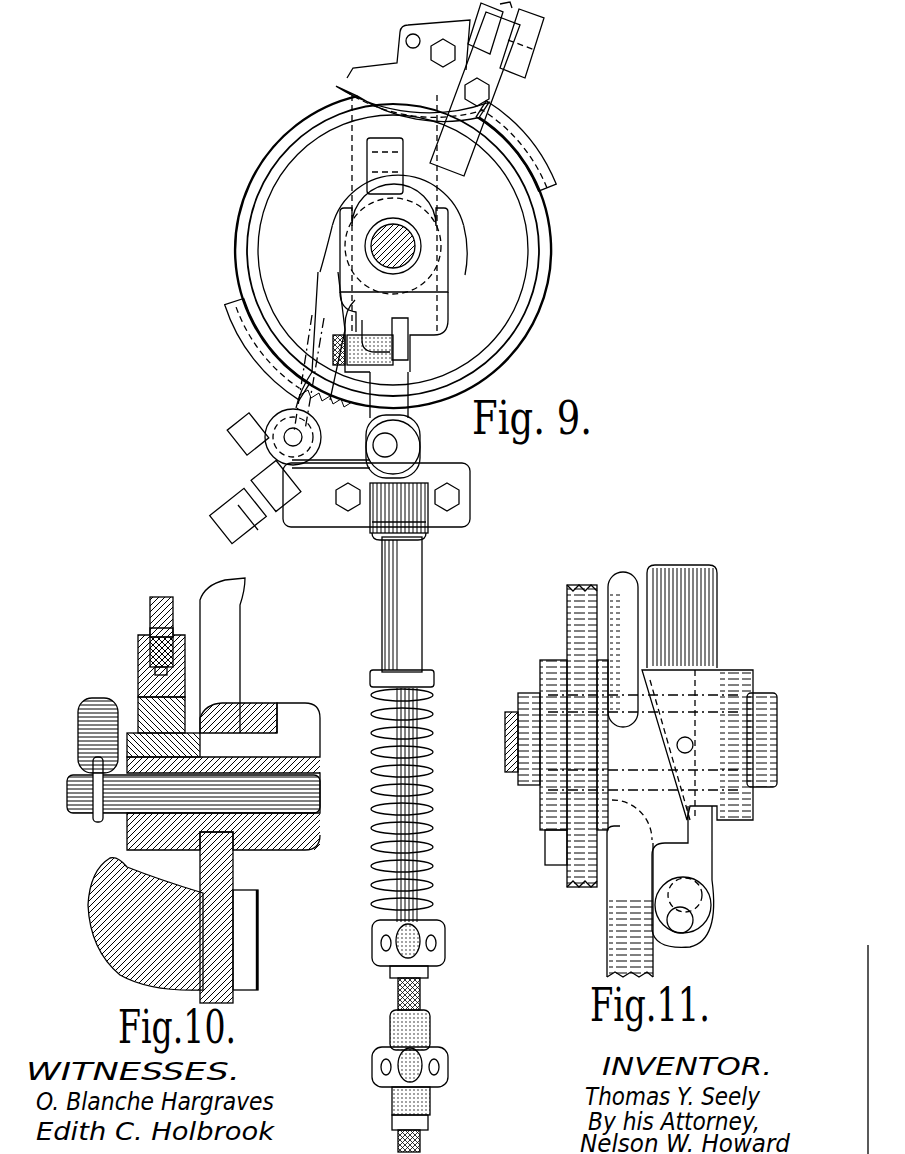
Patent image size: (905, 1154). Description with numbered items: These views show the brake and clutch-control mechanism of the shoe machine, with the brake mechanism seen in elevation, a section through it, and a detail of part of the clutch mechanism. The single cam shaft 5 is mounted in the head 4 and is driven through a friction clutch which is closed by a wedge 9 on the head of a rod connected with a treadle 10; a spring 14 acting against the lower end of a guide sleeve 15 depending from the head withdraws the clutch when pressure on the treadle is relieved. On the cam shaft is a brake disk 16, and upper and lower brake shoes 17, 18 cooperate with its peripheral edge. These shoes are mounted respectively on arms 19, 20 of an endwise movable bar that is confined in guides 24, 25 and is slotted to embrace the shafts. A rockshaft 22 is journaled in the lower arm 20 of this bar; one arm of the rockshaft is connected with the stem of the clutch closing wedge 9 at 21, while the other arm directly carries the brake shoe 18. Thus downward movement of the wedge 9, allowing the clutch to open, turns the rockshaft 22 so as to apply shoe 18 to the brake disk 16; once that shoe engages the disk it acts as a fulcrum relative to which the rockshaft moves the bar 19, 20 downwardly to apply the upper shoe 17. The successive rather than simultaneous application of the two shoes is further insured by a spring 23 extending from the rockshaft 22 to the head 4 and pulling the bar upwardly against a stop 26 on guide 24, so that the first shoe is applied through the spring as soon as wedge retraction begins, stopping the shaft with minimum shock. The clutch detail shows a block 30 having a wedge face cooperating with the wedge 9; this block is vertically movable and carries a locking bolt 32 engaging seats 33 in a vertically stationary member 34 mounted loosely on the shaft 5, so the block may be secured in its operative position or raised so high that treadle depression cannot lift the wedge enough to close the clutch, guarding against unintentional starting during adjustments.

In FIG. 9, the head 4 is at (440, 345).
In FIG. 9, the cam shaft 5 is at (410, 247).
In FIG. 11, the cam shaft 5 is at (760, 713).
In FIG. 9, the clutch closing wedge 9 is at (427, 170).
In FIG. 11, the clutch closing wedge 9 is at (633, 865).
In FIG. 9, the treadle 10 is at (238, 548).
In FIG. 9, the spring 14 is at (440, 842).
In FIG. 9, the guide sleeve 15 is at (422, 622).
In FIG. 9, the brake disk 16 is at (528, 312).
In FIG. 10, the brake disk 16 is at (148, 608).
In FIG. 9, the upper brake shoe 17 is at (545, 178).
In FIG. 9, the lower brake shoe 18 is at (250, 311).
In FIG. 10, the lower brake shoe 18 is at (143, 683).
In FIG. 9, the upper arm of bar 19 is at (447, 133).
In FIG. 11, the upper arm of bar 19 is at (567, 596).
In FIG. 9, the lower arm of bar 20 is at (325, 367).
In FIG. 10, the lower arm of bar 20 is at (232, 658).
In FIG. 11, the lower arm of bar 20 is at (570, 873).
In FIG. 9, the connection of rockshaft arm to wedge stem 21 is at (418, 452).
In FIG. 9, the rockshaft 22 is at (273, 447).
In FIG. 10, the rockshaft 22 is at (250, 738).
In FIG. 9, the spring 23 is at (405, 368).
In FIG. 10, the spring 23 is at (82, 735).
In FIG. 9, the guide 24 is at (530, 43).
In FIG. 9, the guide 25 is at (273, 535).
In FIG. 10, the guide 25 is at (258, 990).
In FIG. 9, the stop 26 is at (512, 14).
In FIG. 11, the block 30 is at (703, 703).
In FIG. 9, the locking bolt 32 is at (340, 338).
In FIG. 11, the locking bolt 32 is at (690, 917).
In FIG. 9, the seats 33 is at (400, 328).
In FIG. 11, the seats 33 is at (690, 895).
In FIG. 11, the vertically stationary member 34 is at (723, 687).